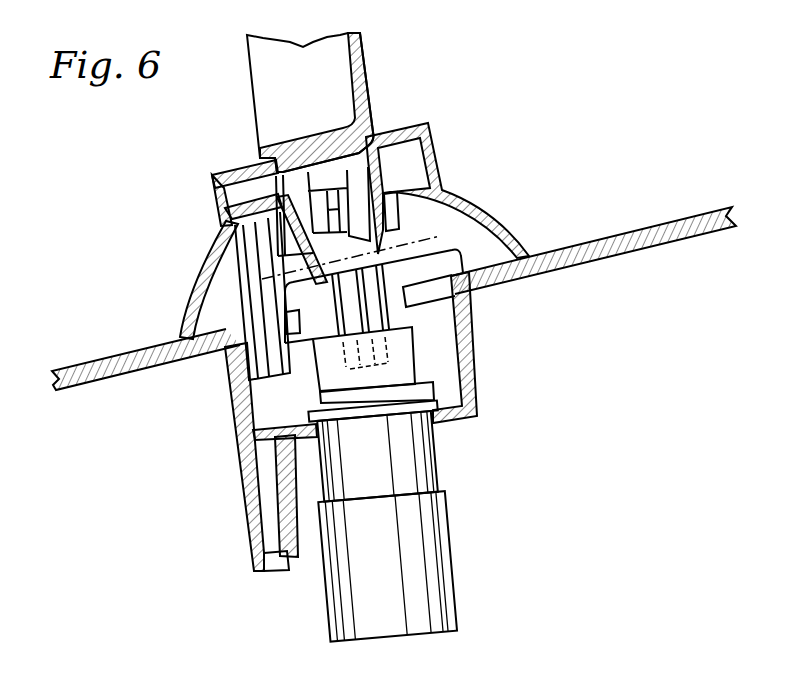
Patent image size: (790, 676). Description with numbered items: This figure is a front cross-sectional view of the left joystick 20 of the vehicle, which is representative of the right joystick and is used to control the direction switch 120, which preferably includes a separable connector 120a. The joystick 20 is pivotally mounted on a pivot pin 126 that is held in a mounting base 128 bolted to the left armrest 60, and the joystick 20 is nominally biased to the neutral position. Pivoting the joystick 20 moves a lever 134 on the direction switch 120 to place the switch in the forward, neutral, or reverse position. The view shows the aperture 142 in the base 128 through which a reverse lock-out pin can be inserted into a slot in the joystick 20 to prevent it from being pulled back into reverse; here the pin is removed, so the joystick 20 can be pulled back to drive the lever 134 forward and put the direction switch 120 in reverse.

The left joystick 20 is at (364, 57).
The left armrest 60 is at (103, 357).
The direction switch 120 is at (437, 452).
The separable connector 120a is at (452, 557).
The pivot pin 126 is at (497, 262).
The mounting base 128 is at (197, 284).
The lever 134 is at (402, 347).
The aperture 142 is at (200, 203).